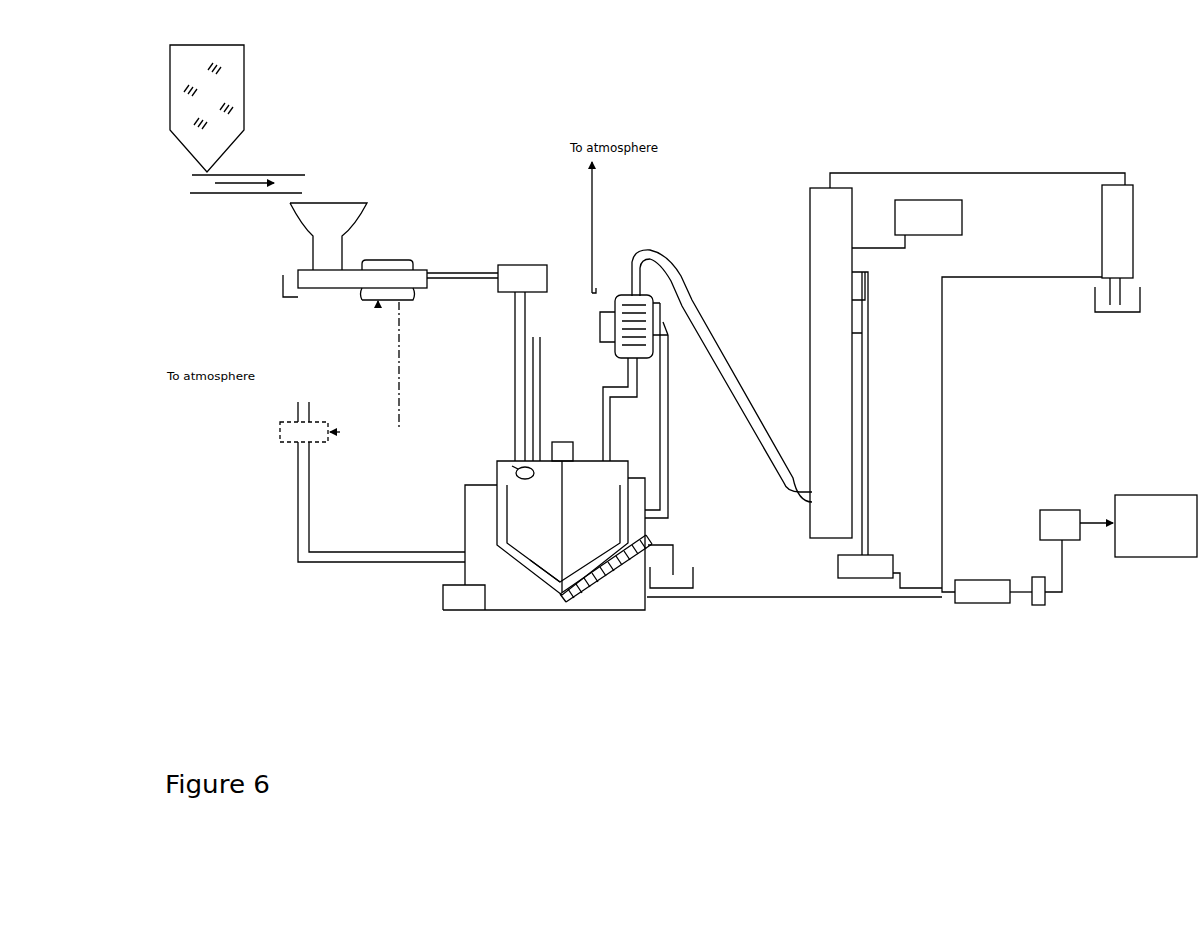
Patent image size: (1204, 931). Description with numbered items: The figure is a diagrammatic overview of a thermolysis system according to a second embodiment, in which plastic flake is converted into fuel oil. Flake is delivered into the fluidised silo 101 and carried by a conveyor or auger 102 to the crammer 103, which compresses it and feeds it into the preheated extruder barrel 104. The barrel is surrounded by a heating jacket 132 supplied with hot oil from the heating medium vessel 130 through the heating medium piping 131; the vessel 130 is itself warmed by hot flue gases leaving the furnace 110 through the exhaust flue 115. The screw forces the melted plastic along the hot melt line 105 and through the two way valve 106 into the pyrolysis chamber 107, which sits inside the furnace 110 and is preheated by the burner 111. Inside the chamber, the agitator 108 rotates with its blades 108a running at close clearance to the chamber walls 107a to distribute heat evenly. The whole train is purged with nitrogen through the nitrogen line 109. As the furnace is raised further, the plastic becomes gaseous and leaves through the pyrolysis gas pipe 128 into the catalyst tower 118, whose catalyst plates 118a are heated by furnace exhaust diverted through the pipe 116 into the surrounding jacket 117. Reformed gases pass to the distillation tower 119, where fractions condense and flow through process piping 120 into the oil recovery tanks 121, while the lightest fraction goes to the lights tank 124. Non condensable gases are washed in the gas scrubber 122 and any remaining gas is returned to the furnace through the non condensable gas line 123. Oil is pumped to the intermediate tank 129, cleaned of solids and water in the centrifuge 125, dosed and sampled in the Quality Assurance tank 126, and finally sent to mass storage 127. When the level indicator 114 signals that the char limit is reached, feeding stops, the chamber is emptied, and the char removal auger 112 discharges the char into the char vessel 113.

The fluidised silo 101 is at (170, 86).
The conveyor or auger 102 is at (272, 167).
The crammer 103 is at (351, 200).
The extruder barrel 104 is at (308, 291).
The hot melt line 105 is at (462, 270).
The two way valve 106 is at (533, 263).
The pyrolysis chamber 107 is at (494, 472).
The chamber wall 107a is at (494, 498).
The agitator 108 is at (564, 440).
The agitator blades 108a is at (535, 562).
The nitrogen line 109 is at (541, 355).
The furnace 110 is at (463, 518).
The burner 111 is at (441, 598).
The auger 112 is at (651, 540).
The char vessel 113 is at (697, 575).
The level indicator 114 is at (512, 467).
The exhaust flue 115 is at (296, 482).
The pipe 116 is at (671, 438).
The jacket 117 is at (664, 323).
The catalyst tower 118 is at (620, 284).
The catalyst plates 118a is at (634, 305).
The distillation tower 119 is at (808, 295).
The process lines 120 is at (872, 352).
The oil recovery tanks 121 is at (837, 569).
The gas scrubber 122 is at (1131, 182).
The non condensable gas line to furnace 123 is at (945, 375).
The lights tank 124 is at (965, 208).
The centrifuge 125 is at (1034, 575).
The Quality Assurance tank 126 is at (1050, 508).
The mass storage 127 is at (1155, 492).
The pyrolysis gas pipe 128 is at (612, 435).
The intermediate tanks 129 is at (952, 603).
The heating medium vessel 130 is at (278, 432).
The heating medium piping 131 is at (403, 355).
The heating jacket 132 is at (389, 258).